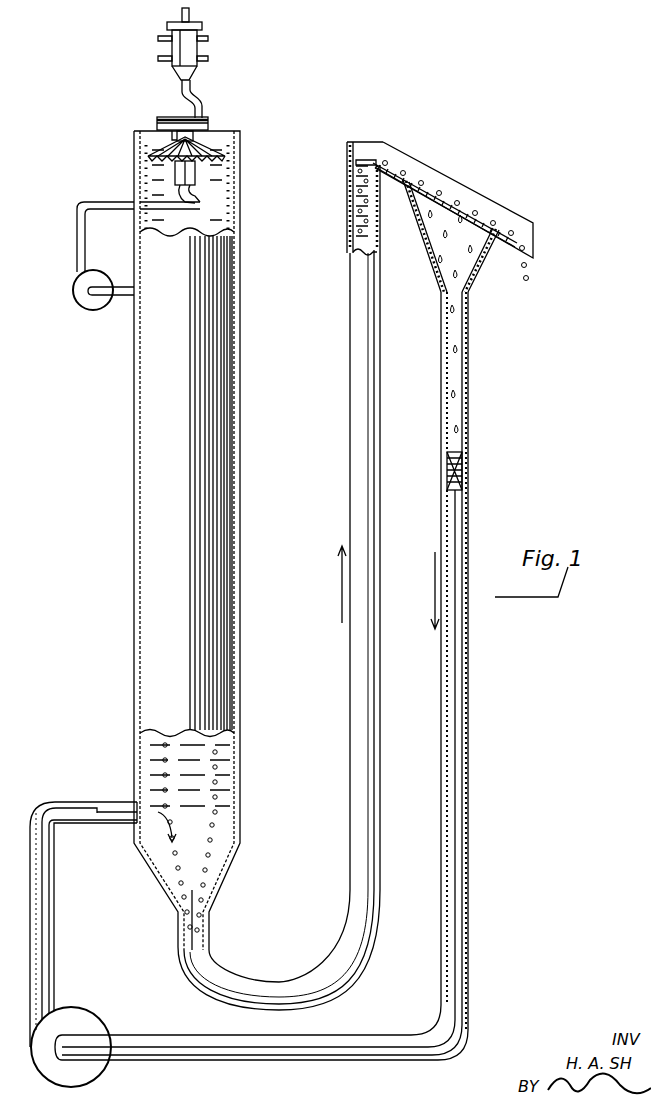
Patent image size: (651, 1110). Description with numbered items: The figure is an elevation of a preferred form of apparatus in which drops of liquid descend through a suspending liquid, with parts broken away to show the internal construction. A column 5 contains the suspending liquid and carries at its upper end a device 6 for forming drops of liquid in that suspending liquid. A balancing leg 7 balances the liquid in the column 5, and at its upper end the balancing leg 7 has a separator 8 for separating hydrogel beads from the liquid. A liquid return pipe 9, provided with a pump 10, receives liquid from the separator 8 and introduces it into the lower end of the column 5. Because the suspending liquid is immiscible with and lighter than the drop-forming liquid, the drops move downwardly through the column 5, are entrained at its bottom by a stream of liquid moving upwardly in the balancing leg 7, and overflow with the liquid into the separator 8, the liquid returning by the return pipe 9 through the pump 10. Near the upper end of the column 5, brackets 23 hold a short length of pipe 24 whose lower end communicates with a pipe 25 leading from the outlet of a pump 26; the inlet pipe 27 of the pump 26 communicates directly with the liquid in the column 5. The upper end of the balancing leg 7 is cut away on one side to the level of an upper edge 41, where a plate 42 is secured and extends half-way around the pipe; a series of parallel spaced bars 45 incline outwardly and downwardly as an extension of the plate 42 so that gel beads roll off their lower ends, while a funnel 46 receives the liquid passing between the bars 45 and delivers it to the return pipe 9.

The column 5 is at (151, 459).
The device for forming drops 6 is at (199, 105).
The balancing leg 7 is at (353, 471).
The separator 8 is at (445, 170).
The liquid return pipe 9 is at (464, 654).
The pump 10 is at (87, 1027).
The brackets 23 is at (226, 195).
The short length of pipe 24 is at (235, 203).
The pipe 25 is at (104, 212).
The pump 26 is at (86, 306).
The inlet pipe 27 is at (116, 300).
The upper edge 41 is at (372, 156).
The plate 42 is at (399, 166).
The parallel spaced bars 45 is at (478, 200).
The funnel 46 is at (480, 264).